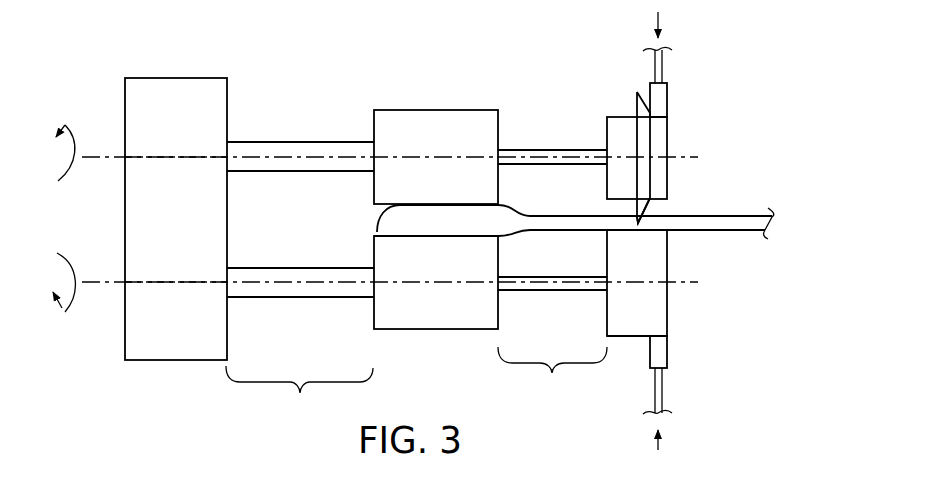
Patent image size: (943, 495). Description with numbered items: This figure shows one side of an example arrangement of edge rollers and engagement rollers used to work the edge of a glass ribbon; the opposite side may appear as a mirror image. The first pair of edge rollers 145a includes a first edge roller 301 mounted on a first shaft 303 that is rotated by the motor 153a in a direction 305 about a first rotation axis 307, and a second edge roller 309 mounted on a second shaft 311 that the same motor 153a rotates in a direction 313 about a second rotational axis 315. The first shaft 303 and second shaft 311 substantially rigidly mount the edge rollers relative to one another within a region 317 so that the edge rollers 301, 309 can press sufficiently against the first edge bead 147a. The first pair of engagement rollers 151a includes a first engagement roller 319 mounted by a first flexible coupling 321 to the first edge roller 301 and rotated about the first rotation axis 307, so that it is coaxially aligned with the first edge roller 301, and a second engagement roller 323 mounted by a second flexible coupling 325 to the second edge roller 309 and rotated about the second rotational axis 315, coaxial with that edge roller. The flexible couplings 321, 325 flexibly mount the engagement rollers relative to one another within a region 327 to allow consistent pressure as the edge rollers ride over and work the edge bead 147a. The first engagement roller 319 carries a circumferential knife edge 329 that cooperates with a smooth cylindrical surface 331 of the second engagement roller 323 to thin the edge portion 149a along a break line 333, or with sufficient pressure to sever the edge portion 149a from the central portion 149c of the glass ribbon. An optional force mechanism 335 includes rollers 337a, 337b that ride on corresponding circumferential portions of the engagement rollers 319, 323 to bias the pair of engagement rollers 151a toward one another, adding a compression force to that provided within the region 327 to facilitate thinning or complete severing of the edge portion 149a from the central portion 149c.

The motor 153a is at (172, 77).
The direction 305 is at (65, 125).
The first rotation axis 307 is at (190, 156).
The first shaft 303 is at (282, 141).
The first edge roller 301 is at (390, 109).
The first pair of edge rollers 145a is at (447, 199).
The first flexible coupling 321 is at (544, 149).
The circumferential knife edge 329 is at (637, 105).
The roller 337b is at (670, 91).
The first engagement roller 319 is at (667, 135).
The first pair of engagement rollers 151a is at (742, 170).
The break line 333 is at (645, 219).
The first edge bead 147a is at (375, 228).
The second rotational axis 315 is at (186, 281).
The second shaft 311 is at (252, 267).
The direction 313 is at (65, 312).
The central portion 149c is at (738, 232).
The second edge roller 309 is at (435, 331).
The second flexible coupling 325 is at (530, 292).
The edge portion 149a is at (578, 236).
The second engagement roller 323 is at (667, 298).
The region 327 is at (552, 378).
The roller 337a is at (667, 355).
The force mechanism 335 is at (690, 382).
The smooth cylindrical surface 331 is at (623, 342).
The region 317 is at (299, 397).